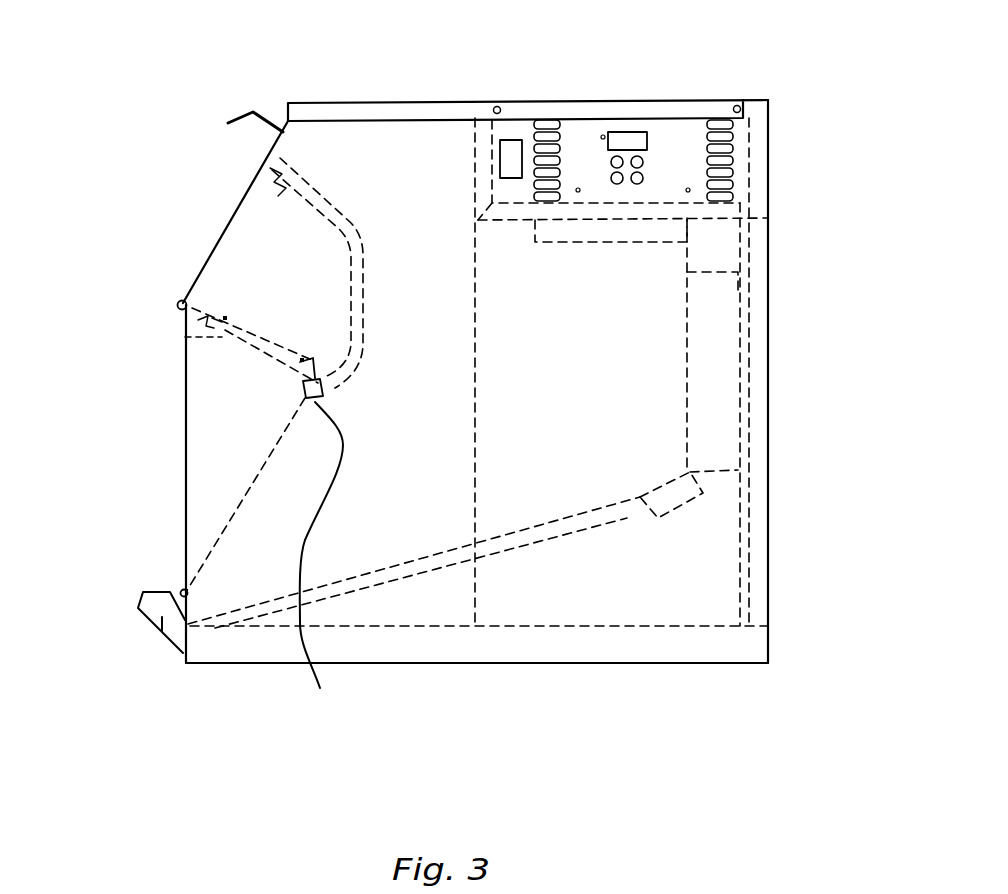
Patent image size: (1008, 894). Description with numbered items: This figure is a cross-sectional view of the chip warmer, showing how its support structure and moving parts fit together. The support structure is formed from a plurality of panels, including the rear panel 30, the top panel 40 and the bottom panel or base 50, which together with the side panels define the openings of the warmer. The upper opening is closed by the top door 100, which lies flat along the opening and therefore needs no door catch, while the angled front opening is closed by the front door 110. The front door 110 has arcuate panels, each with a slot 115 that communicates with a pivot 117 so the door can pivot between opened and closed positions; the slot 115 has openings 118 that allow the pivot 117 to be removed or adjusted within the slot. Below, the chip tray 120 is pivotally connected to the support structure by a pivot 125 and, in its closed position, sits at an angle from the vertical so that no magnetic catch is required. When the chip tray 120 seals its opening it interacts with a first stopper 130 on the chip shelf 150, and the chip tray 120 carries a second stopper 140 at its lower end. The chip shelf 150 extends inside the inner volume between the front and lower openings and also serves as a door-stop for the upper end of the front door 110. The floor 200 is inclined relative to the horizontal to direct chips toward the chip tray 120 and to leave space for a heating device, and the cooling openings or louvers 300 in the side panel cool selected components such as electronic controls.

The rear panel 30 is at (770, 281).
The top panel 40 is at (622, 100).
The bottom panel 50 is at (613, 663).
The top door 100 is at (387, 103).
The front door 110 is at (224, 230).
The slot 115 is at (353, 222).
The pivot 117 is at (267, 163).
The openings 118 is at (357, 285).
The chip tray 120 is at (268, 462).
The pivot 125 is at (182, 589).
The first stopper 130 is at (321, 563).
The second stopper 140 is at (162, 632).
The chip shelf 150 is at (252, 341).
The floor 200 is at (432, 590).
The cooling openings 300 is at (677, 150).